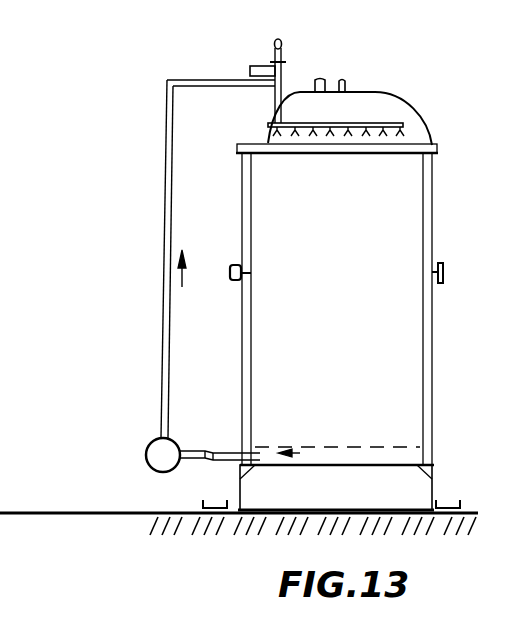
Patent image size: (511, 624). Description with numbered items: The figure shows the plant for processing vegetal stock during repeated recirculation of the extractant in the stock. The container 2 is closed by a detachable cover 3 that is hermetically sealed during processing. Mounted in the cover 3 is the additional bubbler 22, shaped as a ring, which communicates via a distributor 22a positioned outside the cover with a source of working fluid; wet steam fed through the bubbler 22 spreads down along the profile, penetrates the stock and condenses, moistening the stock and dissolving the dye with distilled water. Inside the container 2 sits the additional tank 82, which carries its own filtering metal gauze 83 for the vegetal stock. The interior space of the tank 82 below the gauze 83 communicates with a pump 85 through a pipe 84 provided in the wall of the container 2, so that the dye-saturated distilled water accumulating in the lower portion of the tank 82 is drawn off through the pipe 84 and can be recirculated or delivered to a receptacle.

The container 2 is at (437, 200).
The detachable cover 3 is at (423, 118).
The additional bubbler 22 is at (390, 120).
The distributor 22a is at (262, 66).
The additional tank 82 is at (425, 325).
The filtering metal gauze 83 is at (357, 445).
The pipe 84 is at (222, 450).
The pump 85 is at (150, 440).